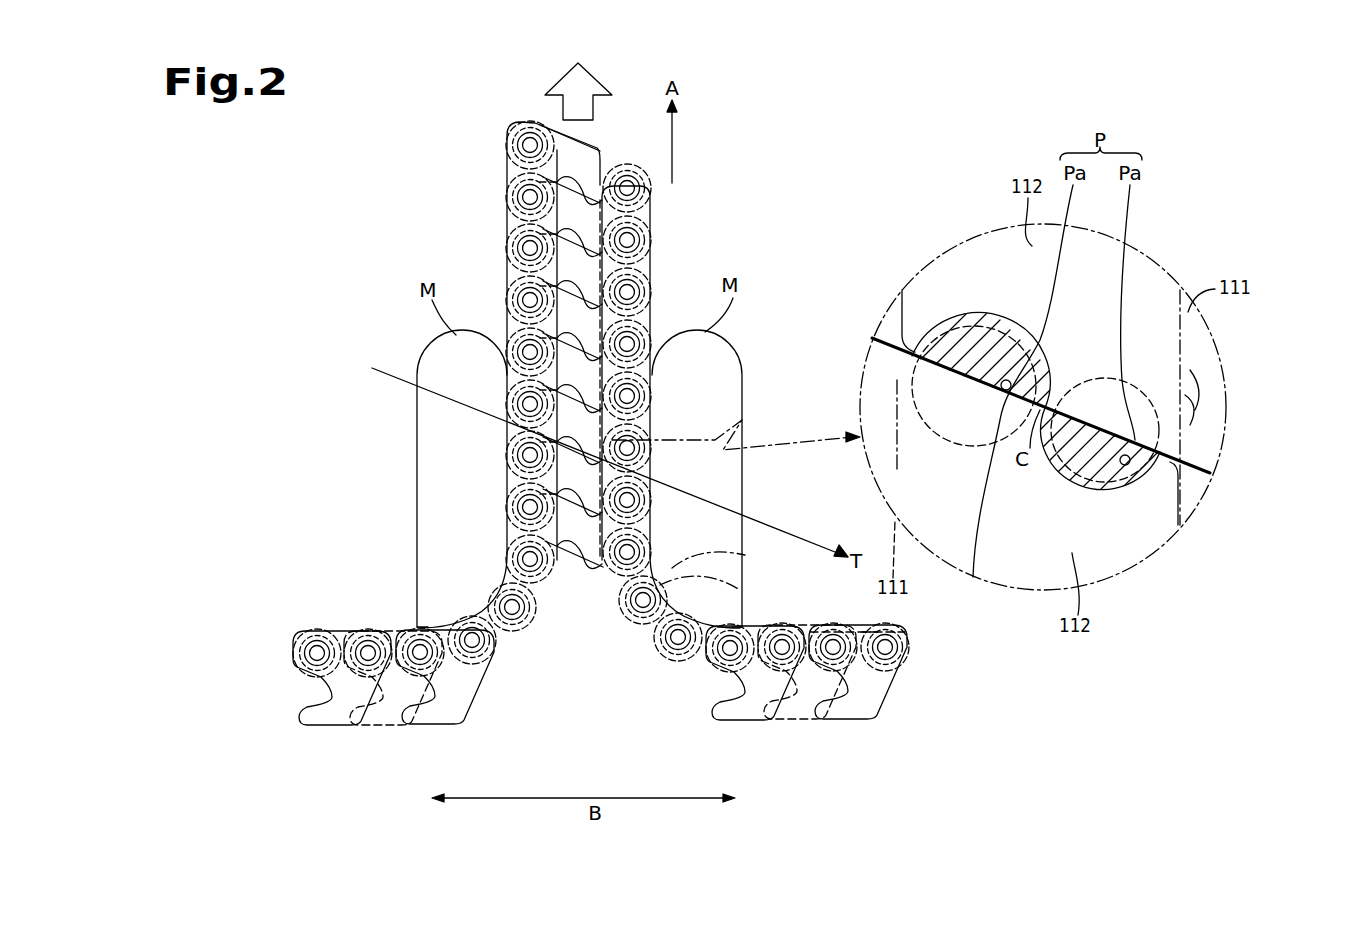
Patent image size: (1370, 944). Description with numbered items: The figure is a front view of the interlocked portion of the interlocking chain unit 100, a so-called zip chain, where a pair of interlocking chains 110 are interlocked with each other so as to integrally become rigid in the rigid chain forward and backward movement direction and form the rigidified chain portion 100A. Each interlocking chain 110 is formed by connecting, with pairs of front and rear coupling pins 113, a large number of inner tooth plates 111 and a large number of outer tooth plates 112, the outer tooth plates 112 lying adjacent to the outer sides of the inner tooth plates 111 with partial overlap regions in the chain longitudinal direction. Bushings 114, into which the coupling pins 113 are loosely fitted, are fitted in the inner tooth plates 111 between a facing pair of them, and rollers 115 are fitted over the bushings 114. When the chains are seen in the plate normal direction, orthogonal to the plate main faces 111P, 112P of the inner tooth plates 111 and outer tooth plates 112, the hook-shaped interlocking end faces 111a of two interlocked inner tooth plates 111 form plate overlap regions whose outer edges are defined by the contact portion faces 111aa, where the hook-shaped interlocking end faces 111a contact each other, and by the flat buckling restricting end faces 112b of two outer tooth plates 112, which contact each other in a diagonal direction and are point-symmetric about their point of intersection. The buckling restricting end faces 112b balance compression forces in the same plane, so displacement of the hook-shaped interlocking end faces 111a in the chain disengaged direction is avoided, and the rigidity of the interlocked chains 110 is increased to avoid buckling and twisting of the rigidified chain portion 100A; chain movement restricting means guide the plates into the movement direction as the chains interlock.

The interlocking chain unit 100 is at (700, 164).
The rigidified chain portion 100A is at (497, 532).
The interlocking chain 110 is at (425, 728).
The inner tooth plate 111 is at (512, 432).
The outer tooth plate 112 is at (512, 485).
The coupling pin 113 is at (652, 601).
The bushing 114 is at (668, 590).
The roller 115 is at (672, 568).
The plate main face 111P is at (812, 685).
The plate main face 112P is at (878, 676).
The hook-shaped interlocking end face 111a is at (1200, 345).
The contact portion face 111aa is at (968, 332).
The buckling restricting end face 112b is at (1138, 420).